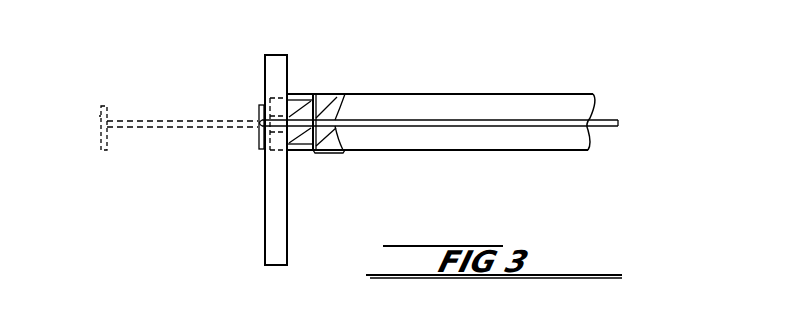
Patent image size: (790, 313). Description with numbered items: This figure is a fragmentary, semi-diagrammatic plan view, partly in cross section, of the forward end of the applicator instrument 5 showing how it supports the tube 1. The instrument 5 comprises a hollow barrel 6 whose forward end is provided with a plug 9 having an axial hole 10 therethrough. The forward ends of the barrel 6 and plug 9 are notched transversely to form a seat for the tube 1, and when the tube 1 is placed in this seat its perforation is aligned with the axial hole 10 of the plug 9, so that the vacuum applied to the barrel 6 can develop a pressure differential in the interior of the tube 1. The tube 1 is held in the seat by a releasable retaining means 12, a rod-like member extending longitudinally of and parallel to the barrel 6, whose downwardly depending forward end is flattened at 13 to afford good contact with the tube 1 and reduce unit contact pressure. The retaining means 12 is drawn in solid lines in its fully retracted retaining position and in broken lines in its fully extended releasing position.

The tube 1 is at (280, 66).
The applicator instrument 5 is at (505, 90).
The hollow barrel 6 is at (322, 152).
The plug 9 is at (300, 152).
The axial hole 10 is at (330, 100).
The retaining means 12 is at (143, 121).
The flattened forward end 13 is at (259, 142).